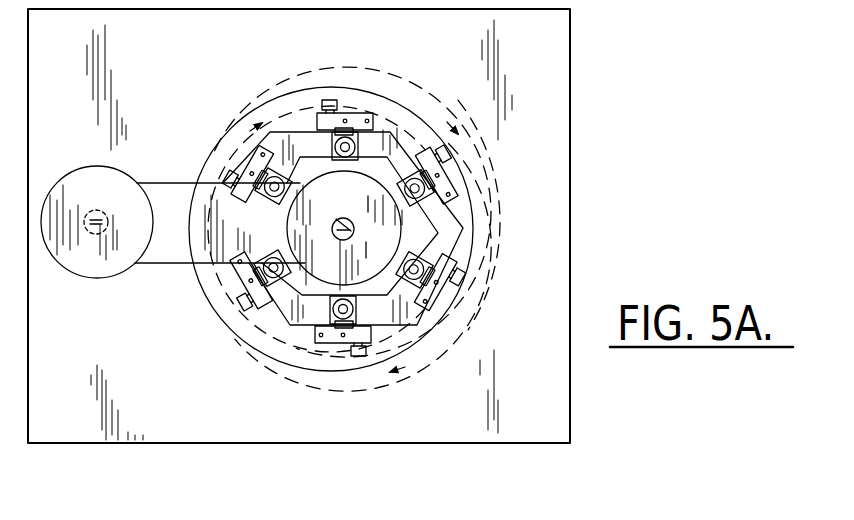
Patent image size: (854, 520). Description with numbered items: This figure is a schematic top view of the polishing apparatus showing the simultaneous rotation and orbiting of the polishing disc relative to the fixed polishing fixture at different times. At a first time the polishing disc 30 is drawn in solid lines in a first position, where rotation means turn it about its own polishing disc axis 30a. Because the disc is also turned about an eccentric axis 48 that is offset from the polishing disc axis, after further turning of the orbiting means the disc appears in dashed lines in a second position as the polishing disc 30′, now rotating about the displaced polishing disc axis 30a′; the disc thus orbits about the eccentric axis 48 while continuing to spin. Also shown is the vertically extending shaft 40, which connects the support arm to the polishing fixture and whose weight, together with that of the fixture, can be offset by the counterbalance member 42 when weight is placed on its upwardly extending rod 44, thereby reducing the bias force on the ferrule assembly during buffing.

The polishing disc 30 is at (213, 156).
The polishing disc 30′ is at (376, 64).
The polishing disc axis 30a is at (325, 227).
The polishing disc axis 30a′ is at (360, 203).
The shaft 40 is at (340, 223).
The counterbalance member 42 is at (121, 258).
The rod 44 is at (95, 210).
The eccentric axis 48 is at (352, 224).